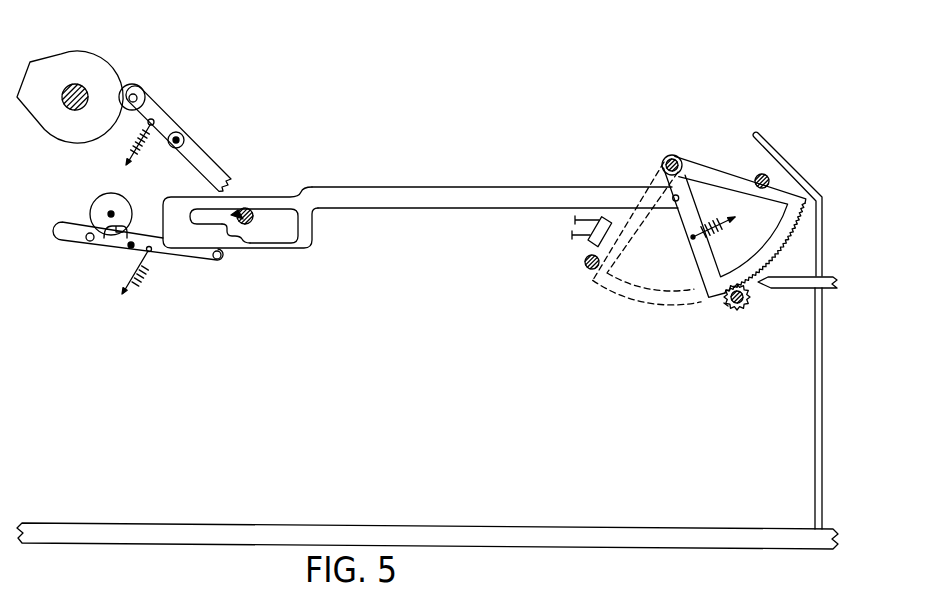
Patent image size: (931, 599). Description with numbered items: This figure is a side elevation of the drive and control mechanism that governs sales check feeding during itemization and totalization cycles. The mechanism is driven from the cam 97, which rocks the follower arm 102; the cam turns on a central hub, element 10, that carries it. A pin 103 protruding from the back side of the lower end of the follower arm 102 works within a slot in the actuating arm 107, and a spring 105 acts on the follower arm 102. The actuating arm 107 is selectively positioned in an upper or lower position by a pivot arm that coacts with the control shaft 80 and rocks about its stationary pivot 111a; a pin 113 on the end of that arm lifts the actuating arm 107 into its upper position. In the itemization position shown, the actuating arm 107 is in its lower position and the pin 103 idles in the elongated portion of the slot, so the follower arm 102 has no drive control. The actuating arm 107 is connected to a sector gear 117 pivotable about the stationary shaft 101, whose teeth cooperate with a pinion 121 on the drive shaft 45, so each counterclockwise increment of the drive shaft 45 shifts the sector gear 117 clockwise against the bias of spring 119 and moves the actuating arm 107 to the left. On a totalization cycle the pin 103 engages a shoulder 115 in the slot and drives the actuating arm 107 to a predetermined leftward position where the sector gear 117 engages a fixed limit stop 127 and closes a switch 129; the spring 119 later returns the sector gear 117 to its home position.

The cam 97 is at (50, 56).
The shaft 10 is at (83, 86).
The follower arm 102 is at (167, 115).
The spring 105 is at (132, 149).
The control shaft 80 is at (111, 214).
The fixed limit stop 127 is at (88, 240).
The stationary pivot 111a is at (130, 247).
The pin 113 is at (215, 262).
The pin 103 is at (248, 209).
The shoulder 115 is at (250, 241).
The actuating arm 107 is at (400, 209).
The switch 129 is at (589, 240).
The stationary shaft 101 is at (662, 162).
The sector gear 117 is at (697, 163).
The spring 119 is at (706, 221).
The drive shaft 45 is at (748, 305).
The pinion 121 is at (727, 308).